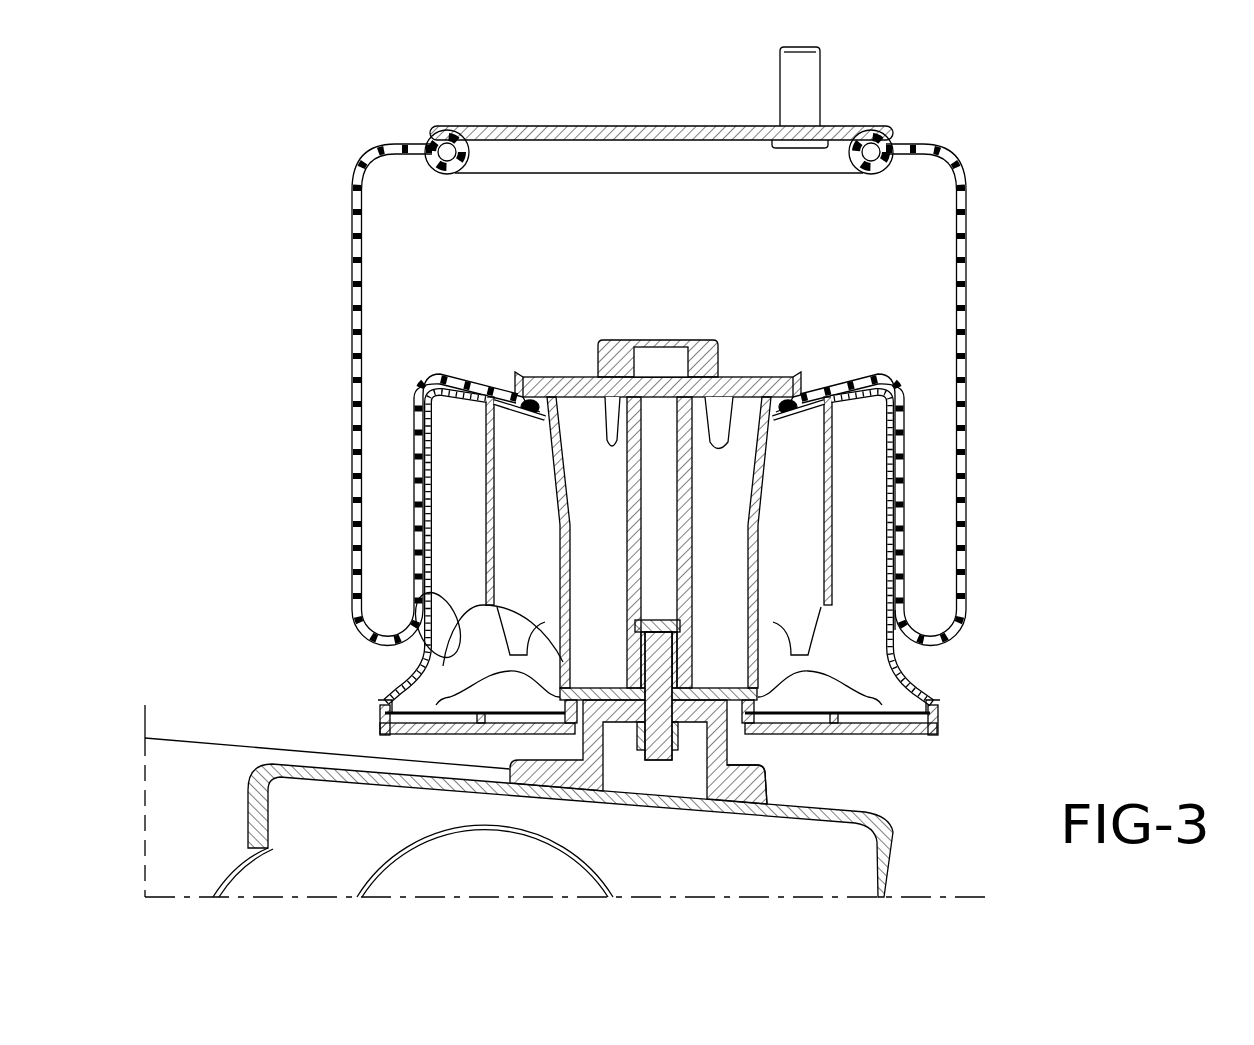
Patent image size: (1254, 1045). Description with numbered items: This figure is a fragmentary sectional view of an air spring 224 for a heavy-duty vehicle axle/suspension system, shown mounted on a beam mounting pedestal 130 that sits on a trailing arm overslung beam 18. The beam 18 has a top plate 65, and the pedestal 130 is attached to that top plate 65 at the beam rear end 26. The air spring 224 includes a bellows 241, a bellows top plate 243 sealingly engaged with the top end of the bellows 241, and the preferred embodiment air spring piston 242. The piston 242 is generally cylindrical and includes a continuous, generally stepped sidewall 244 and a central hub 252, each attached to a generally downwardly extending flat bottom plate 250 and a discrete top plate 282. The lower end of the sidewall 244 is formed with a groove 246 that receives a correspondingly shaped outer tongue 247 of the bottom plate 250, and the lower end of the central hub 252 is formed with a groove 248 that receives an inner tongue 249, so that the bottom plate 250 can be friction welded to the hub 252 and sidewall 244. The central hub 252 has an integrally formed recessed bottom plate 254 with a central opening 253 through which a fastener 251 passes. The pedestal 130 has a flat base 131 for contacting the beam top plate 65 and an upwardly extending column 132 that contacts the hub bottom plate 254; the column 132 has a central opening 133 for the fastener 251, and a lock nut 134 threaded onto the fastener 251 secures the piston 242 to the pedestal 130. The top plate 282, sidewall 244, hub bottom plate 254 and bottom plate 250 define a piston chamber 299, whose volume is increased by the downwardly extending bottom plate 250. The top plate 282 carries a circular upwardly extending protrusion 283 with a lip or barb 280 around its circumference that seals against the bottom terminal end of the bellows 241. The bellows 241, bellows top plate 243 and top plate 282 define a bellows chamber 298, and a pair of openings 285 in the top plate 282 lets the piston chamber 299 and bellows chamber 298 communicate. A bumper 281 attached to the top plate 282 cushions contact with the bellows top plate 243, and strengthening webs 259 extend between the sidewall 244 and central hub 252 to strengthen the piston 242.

The trailing arm overslung beam 18 is at (183, 735).
The rear end 26 is at (573, 830).
The top plate 65 is at (225, 745).
The beam mounting pedestal 130 is at (738, 810).
The flat base 131 is at (760, 790).
The column 132 is at (682, 756).
The central opening 133 is at (662, 742).
The lock nut 134 is at (636, 742).
The air spring 224 is at (258, 256).
The bellows 241 is at (683, 413).
The air spring piston 242 is at (924, 679).
The bellows top plate 243 is at (840, 127).
The sidewall 244 is at (910, 650).
The groove 246 is at (388, 735).
The outer tongue 247 is at (378, 703).
The groove 248 is at (560, 703).
The inner tongue 249 is at (580, 712).
The bottom plate 250 is at (480, 735).
The fastener 251 is at (647, 758).
The central hub 252 is at (571, 556).
The central opening 253 is at (690, 636).
The recessed bottom plate 254 is at (706, 700).
The strengthening webs 259 is at (550, 567).
The lip or barb 280 is at (605, 343).
The bumper 281 is at (690, 342).
The top plate 282 is at (780, 365).
The protrusion 283 is at (524, 376).
The openings 285 is at (580, 397).
The bellows chamber 298 is at (360, 400).
The piston chamber 299 is at (445, 612).